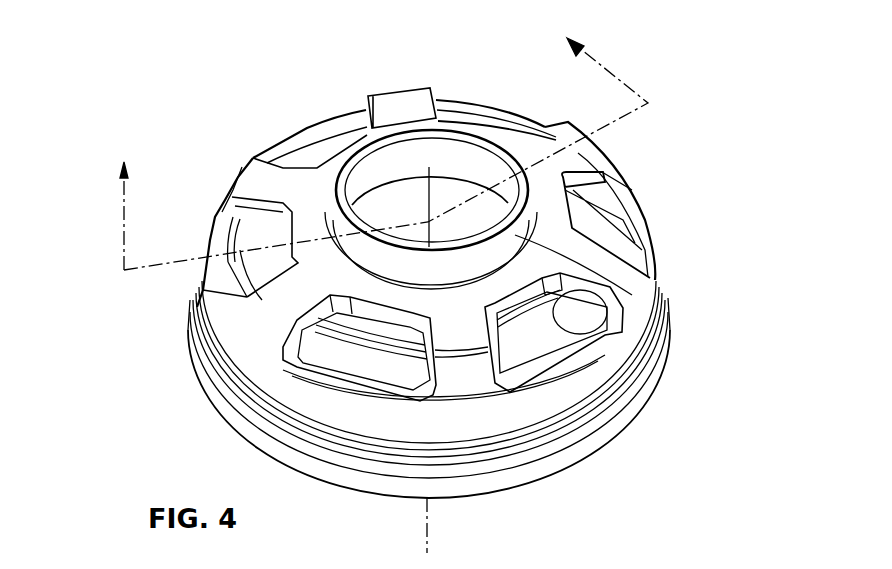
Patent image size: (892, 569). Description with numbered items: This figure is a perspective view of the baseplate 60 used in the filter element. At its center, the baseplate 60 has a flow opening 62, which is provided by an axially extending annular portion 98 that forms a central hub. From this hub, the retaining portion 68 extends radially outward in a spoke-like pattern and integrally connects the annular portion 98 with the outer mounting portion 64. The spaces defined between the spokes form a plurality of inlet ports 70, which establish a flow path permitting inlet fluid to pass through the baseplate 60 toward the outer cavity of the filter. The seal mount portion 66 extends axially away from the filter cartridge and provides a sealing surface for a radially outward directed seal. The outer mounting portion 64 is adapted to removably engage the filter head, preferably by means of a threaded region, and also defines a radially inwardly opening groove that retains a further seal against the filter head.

The baseplate 60 is at (173, 73).
The flow opening 62 is at (463, 150).
The outer mounting portion 64 is at (612, 373).
The seal mount portion 66 is at (547, 337).
The retaining portion 68 is at (593, 247).
The inlet ports 70 is at (244, 295).
The annular portion 98 is at (640, 276).